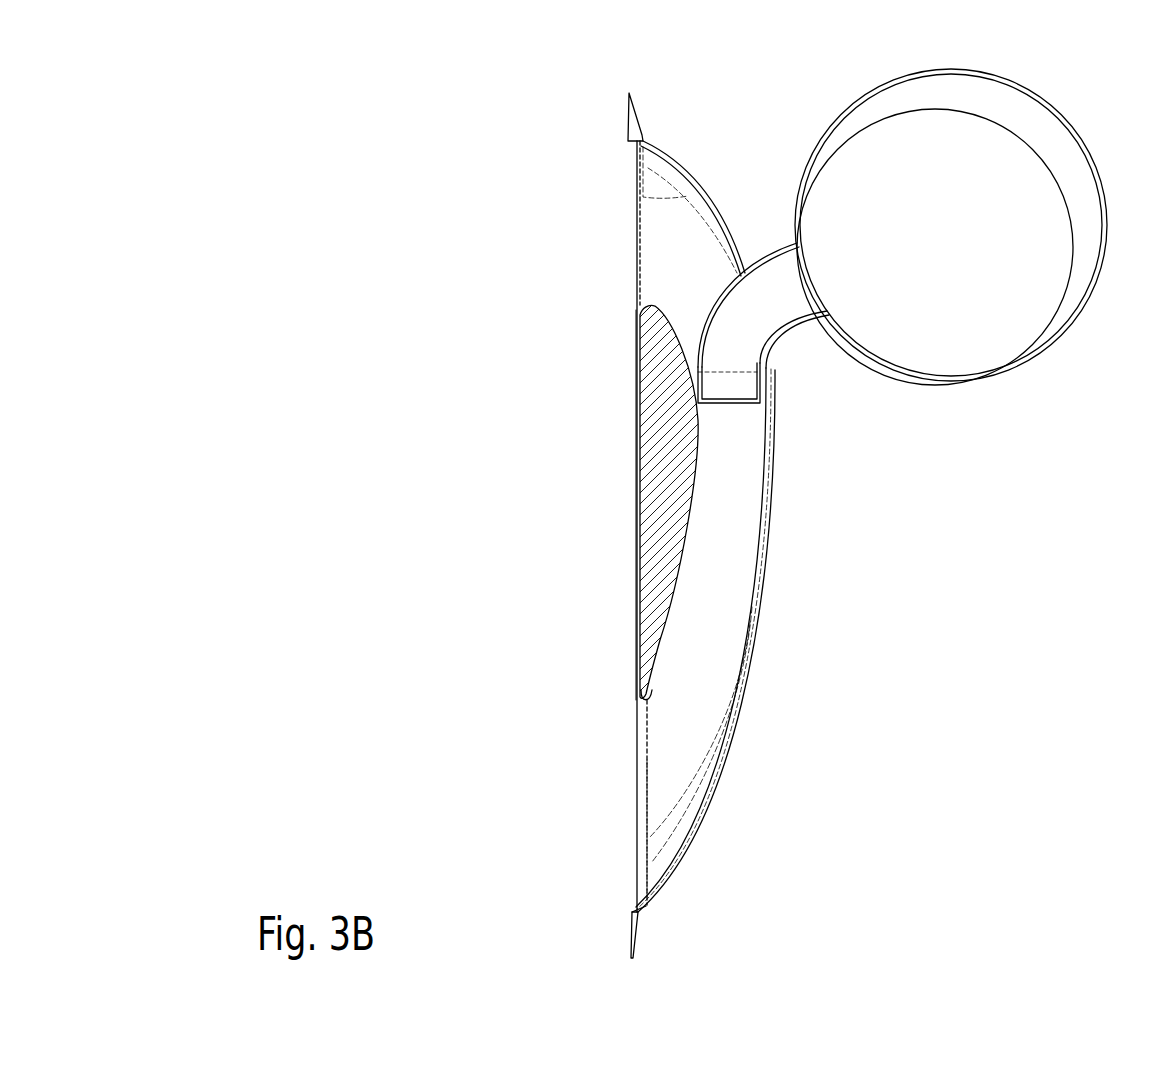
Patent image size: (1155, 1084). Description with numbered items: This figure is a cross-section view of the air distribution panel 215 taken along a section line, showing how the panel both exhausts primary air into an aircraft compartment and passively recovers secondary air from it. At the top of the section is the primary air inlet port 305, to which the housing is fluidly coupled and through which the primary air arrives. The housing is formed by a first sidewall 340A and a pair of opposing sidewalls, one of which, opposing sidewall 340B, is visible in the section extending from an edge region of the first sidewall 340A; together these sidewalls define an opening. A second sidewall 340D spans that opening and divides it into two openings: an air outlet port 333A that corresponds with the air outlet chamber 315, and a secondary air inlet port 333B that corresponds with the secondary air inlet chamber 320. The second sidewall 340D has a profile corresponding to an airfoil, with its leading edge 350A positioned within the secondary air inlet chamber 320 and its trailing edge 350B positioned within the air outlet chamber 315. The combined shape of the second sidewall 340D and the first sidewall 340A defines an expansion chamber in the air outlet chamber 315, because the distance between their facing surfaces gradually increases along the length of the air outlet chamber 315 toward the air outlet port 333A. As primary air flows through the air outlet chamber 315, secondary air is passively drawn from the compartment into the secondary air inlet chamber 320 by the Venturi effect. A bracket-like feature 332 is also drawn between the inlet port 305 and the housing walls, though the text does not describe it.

The air distribution panel 215 is at (366, 133).
The primary air inlet port 305 is at (1053, 113).
The air outlet chamber 315 is at (650, 836).
The secondary air inlet chamber 320 is at (650, 234).
The bracket 332 is at (745, 328).
The air outlet port 333A is at (500, 817).
The secondary air inlet port 333B is at (531, 238).
The first sidewall 340A is at (758, 568).
The opposing sidewall 340B is at (712, 653).
The second sidewall 340D is at (636, 474).
The leading edge 350A is at (653, 306).
The trailing edge 350B is at (638, 718).